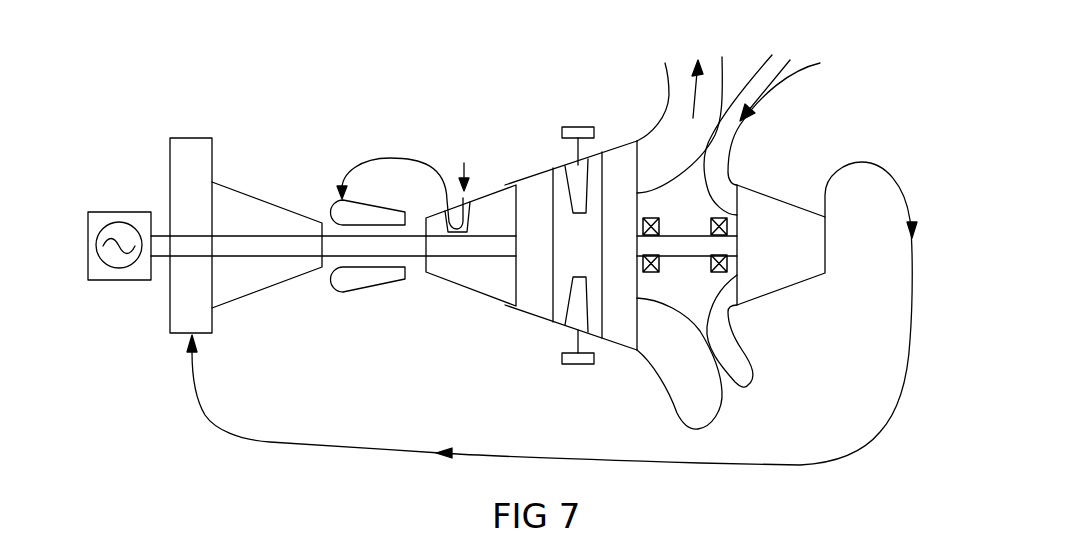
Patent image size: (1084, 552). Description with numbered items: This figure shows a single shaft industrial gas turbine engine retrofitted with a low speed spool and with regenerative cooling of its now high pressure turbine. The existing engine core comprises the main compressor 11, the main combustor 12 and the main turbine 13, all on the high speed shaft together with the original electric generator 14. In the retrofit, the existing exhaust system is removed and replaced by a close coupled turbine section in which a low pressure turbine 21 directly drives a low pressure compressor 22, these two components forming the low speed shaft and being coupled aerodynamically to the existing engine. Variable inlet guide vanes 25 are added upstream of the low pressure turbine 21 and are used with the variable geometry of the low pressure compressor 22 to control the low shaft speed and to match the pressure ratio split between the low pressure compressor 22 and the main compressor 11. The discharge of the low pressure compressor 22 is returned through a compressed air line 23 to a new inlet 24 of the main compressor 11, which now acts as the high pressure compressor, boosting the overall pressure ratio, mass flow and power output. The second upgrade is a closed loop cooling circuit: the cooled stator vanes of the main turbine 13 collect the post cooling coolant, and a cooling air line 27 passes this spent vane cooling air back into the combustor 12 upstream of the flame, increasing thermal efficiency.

The main compressor 11 is at (247, 198).
The main combustor 12 is at (344, 284).
The main turbine 13 is at (472, 277).
The electric generator 14 is at (112, 198).
The low pressure turbine 21 is at (618, 165).
The low pressure compressor 22 is at (763, 218).
The compressed air line 23 is at (705, 463).
The new inlet 24 is at (195, 162).
The variable inlet guide vanes 25 is at (580, 132).
The cooling air line 27 is at (411, 162).